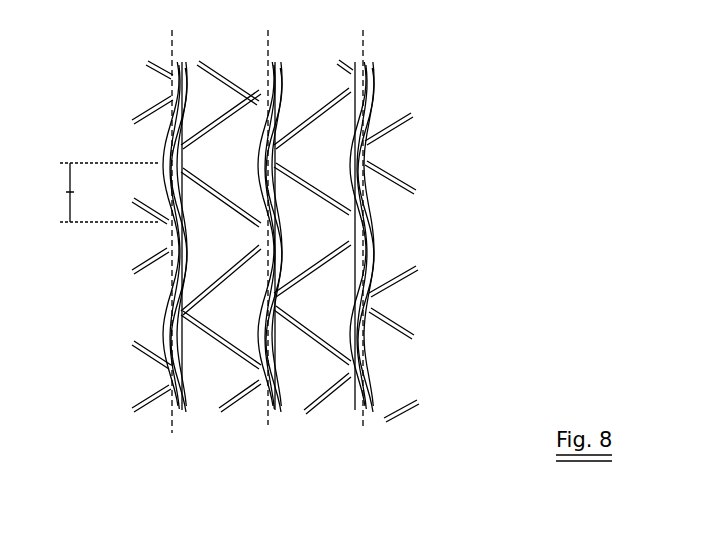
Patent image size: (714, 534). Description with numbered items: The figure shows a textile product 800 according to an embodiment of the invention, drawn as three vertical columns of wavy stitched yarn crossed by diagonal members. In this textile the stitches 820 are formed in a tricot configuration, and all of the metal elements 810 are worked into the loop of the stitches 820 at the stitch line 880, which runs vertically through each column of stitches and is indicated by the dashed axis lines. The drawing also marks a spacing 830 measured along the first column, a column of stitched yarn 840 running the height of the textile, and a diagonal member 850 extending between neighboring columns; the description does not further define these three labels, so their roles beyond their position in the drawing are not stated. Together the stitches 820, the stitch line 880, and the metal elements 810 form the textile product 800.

The lattice structure 800 is at (497, 51).
The metal elements 810 is at (275, 147).
The stitches 820 is at (373, 362).
The spacing 830 is at (87, 192).
The fiber bundle column 840 is at (158, 151).
The diagonal member 850 is at (221, 204).
The stitch line 880 is at (175, 430).